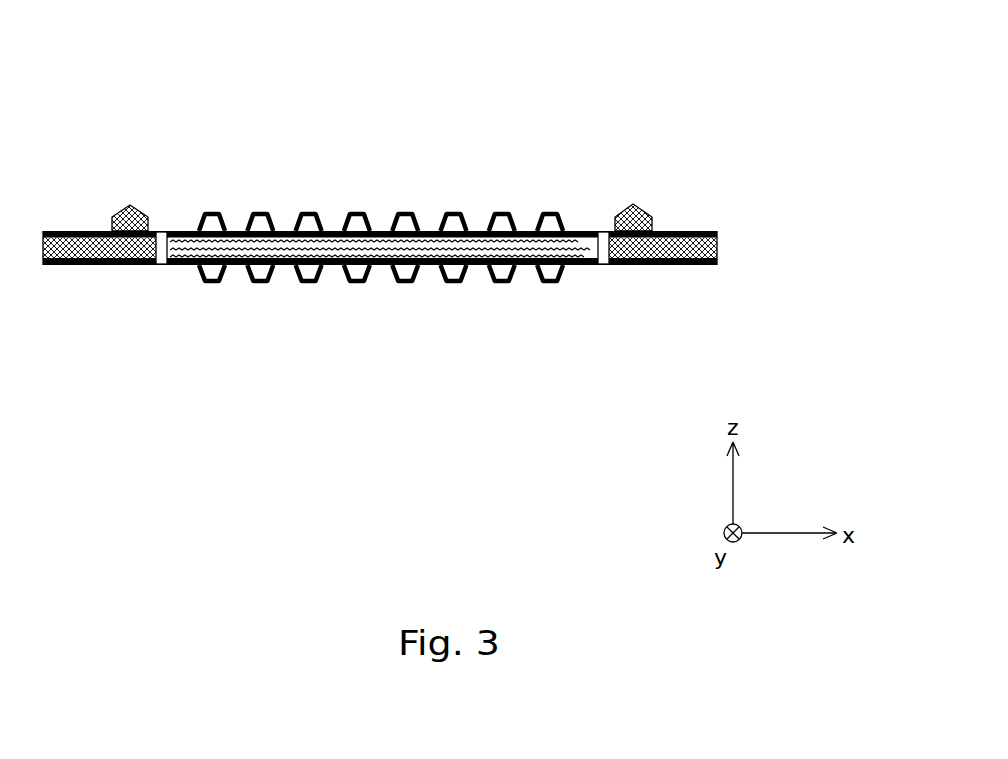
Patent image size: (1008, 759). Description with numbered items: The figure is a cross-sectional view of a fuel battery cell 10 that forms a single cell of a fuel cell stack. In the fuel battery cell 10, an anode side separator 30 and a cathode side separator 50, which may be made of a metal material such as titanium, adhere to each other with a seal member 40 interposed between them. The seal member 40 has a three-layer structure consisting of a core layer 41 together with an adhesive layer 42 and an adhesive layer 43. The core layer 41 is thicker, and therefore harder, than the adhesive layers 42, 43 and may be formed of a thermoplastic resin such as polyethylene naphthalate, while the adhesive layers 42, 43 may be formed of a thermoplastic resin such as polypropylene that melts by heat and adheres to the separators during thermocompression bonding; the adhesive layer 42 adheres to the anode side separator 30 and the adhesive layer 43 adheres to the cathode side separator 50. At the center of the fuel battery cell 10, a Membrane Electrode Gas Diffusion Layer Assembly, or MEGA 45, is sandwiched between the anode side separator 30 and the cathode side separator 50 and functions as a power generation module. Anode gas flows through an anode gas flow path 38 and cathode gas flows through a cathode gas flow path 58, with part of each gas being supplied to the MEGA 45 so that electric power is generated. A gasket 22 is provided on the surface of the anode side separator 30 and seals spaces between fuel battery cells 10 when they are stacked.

The fuel battery cell 10 is at (698, 82).
The gasket 22 is at (115, 210).
The anode side separator 30 is at (679, 230).
The anode gas flow path 38 is at (456, 212).
The seal member 40 is at (858, 192).
The core layer 41 is at (717, 246).
The adhesive layer 42 is at (717, 236).
The adhesive layer 43 is at (717, 261).
The Membrane Electrode Gas Diffusion Layer Assembly (MEGA) 45 is at (190, 252).
The cathode side separator 50 is at (643, 266).
The cathode gas flow path 58 is at (452, 280).